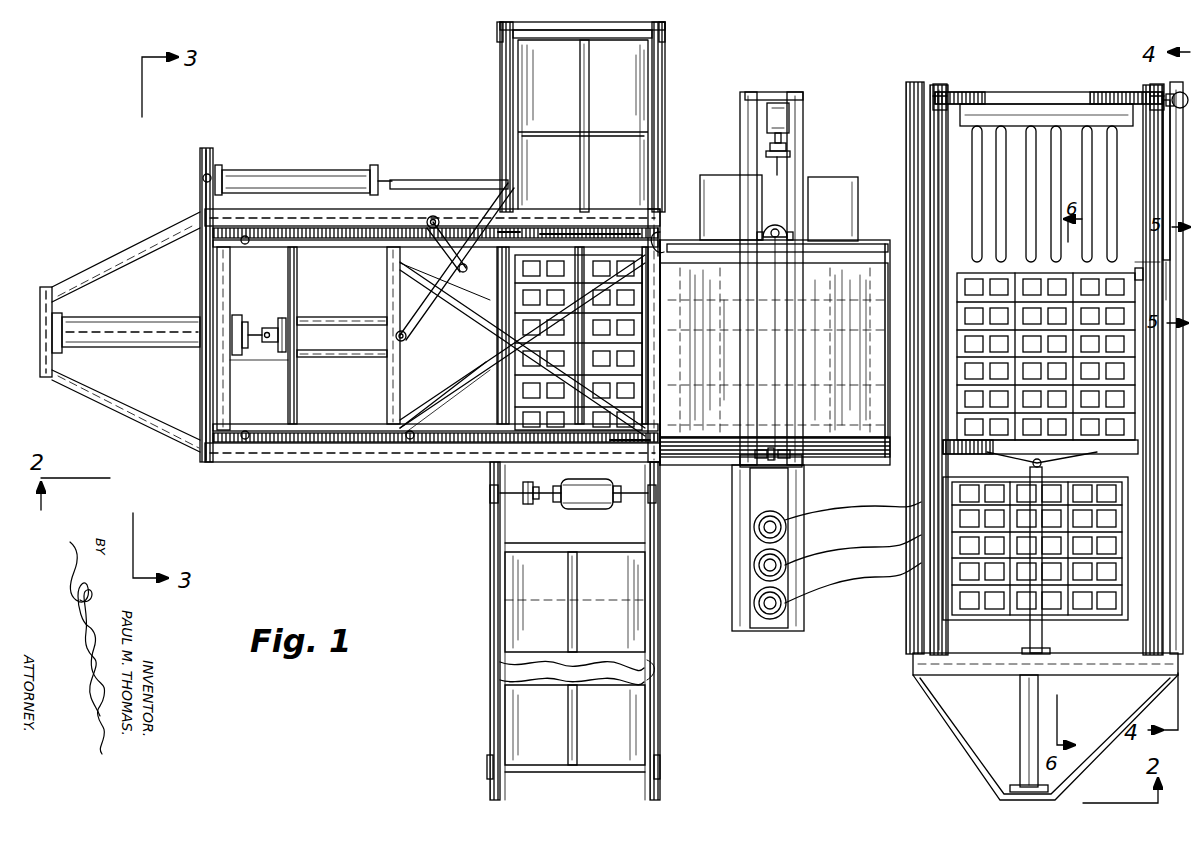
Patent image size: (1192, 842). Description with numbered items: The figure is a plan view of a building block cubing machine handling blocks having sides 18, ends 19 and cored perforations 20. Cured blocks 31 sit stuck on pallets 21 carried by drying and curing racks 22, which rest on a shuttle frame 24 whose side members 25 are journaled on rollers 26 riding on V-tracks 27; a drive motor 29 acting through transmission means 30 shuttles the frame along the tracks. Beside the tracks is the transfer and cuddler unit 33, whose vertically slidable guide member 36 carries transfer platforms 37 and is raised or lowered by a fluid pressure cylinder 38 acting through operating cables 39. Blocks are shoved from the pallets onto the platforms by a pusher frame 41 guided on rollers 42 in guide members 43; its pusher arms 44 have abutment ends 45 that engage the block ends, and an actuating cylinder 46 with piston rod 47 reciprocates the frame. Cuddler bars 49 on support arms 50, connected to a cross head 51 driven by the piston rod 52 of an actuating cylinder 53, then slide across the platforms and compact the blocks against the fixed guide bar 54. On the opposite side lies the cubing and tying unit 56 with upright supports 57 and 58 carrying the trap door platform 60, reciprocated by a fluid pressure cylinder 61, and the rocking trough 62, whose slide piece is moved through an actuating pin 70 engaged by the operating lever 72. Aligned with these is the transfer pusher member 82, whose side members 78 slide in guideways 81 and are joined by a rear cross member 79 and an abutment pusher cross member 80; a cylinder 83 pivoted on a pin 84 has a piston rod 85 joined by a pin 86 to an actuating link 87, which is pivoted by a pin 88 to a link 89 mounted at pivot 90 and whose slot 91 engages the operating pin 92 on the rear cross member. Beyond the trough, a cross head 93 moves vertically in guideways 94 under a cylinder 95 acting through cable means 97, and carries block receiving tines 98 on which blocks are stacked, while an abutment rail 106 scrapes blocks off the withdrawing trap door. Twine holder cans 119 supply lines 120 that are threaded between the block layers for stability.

The sides 18 is at (500, 415).
The ends 19 is at (493, 386).
The cored perforations 20 is at (654, 289).
The pallets 21 is at (504, 332).
The drying and curing racks 22 is at (514, 576).
The shuttle frame 24 is at (490, 682).
The side members 25 is at (512, 107).
The rollers 26 is at (666, 38).
The V-tracks 27 is at (658, 670).
The drive motor 29 is at (596, 498).
The transmission means 30 is at (534, 508).
The blocks 31 is at (494, 289).
The transfer and cuddler unit 33 is at (858, 450).
The guide member 36 is at (798, 222).
The transfer platforms 37 is at (704, 470).
The fluid pressure cylinder 38 is at (774, 220).
The operating cables 39 is at (746, 272).
The pusher frame 41 is at (235, 394).
The rollers 42 is at (260, 224).
The guide members 43 is at (270, 248).
The pusher arms 44 is at (352, 354).
The abutment ends 45 is at (504, 232).
The fluid pressure actuating cylinder 46 is at (140, 322).
The piston rod 47 is at (260, 321).
The cuddler bars 49 is at (866, 246).
The support arms 50 is at (854, 208).
The cross head 51 is at (837, 174).
The piston rod 52 is at (798, 156).
The actuating cylinder 53 is at (768, 128).
The fixed guide bar 54 is at (826, 440).
The cubing and tying unit 56 is at (888, 604).
The upright support 57 is at (902, 666).
The upright support 58 is at (1158, 682).
The trap door platform 60 is at (1123, 446).
The fluid pressure cylinder 61 is at (1018, 714).
The rocking trough 62 is at (950, 268).
The actuating pin 70 is at (1154, 260).
The operating lever 72 is at (1134, 262).
The side member 78 is at (610, 232).
The rear cross member 79 is at (378, 402).
The abutment pusher cross member 80 is at (676, 246).
The guideways 81 is at (338, 244).
The transfer pusher member 82 is at (386, 292).
The fluid pressure cylinder 83 is at (320, 174).
The pin 84 is at (204, 178).
The piston rod 85 is at (426, 182).
The pin 86 is at (508, 183).
The actuating link 87 is at (480, 200).
The pin 88 is at (466, 270).
The link 89 is at (434, 220).
The pivot 90 is at (430, 218).
The slot 91 is at (412, 336).
The operating pin 92 is at (407, 337).
The cross head 93 is at (987, 118).
The guideways 94 is at (938, 84).
The fluid pressure cylinder 95 is at (1176, 88).
The cable means 97 is at (1042, 90).
The block receiving tines 98 is at (1084, 178).
The abutment rail 106 is at (988, 462).
The twine holder cans 119 is at (752, 592).
The lines 120 is at (853, 552).